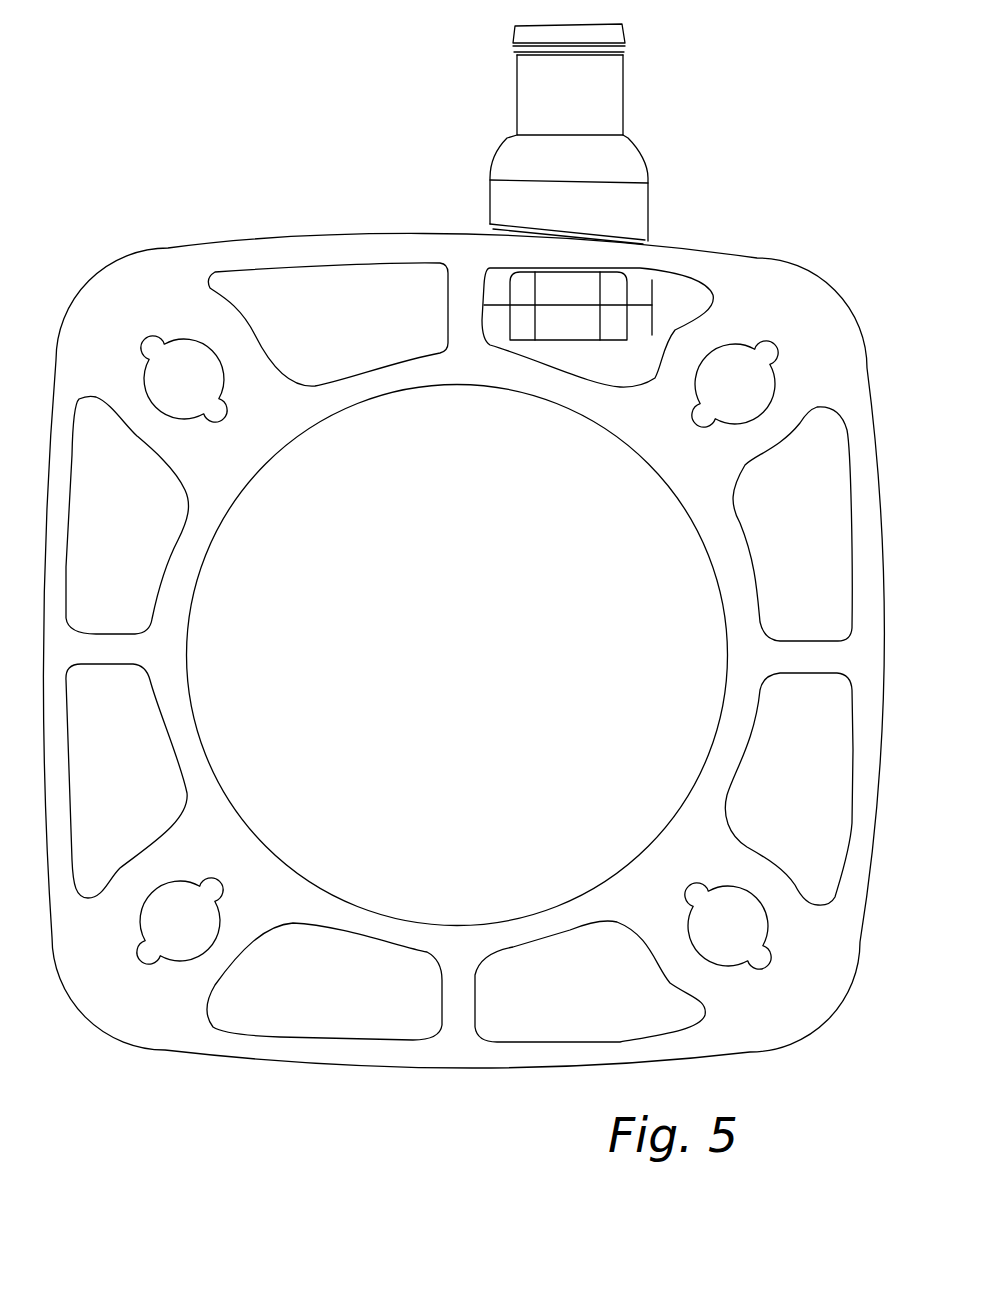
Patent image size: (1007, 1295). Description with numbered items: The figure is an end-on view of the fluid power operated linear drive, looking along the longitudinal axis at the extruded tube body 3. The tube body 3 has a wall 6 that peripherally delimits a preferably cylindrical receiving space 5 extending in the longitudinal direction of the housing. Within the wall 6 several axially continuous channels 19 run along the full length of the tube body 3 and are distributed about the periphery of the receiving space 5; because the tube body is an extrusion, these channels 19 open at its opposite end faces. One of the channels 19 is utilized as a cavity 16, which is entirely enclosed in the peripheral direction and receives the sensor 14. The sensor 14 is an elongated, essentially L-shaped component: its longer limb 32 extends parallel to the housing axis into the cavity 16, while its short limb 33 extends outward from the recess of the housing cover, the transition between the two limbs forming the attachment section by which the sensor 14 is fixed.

The tube body 3 is at (800, 297).
The receiving space 5 is at (466, 613).
The wall 6 is at (188, 268).
The sensor 14 is at (515, 157).
The cavity 16 is at (682, 297).
The axially continuous channels 19 is at (163, 513).
The longer limb 32 is at (583, 292).
The short limb 33 is at (607, 87).